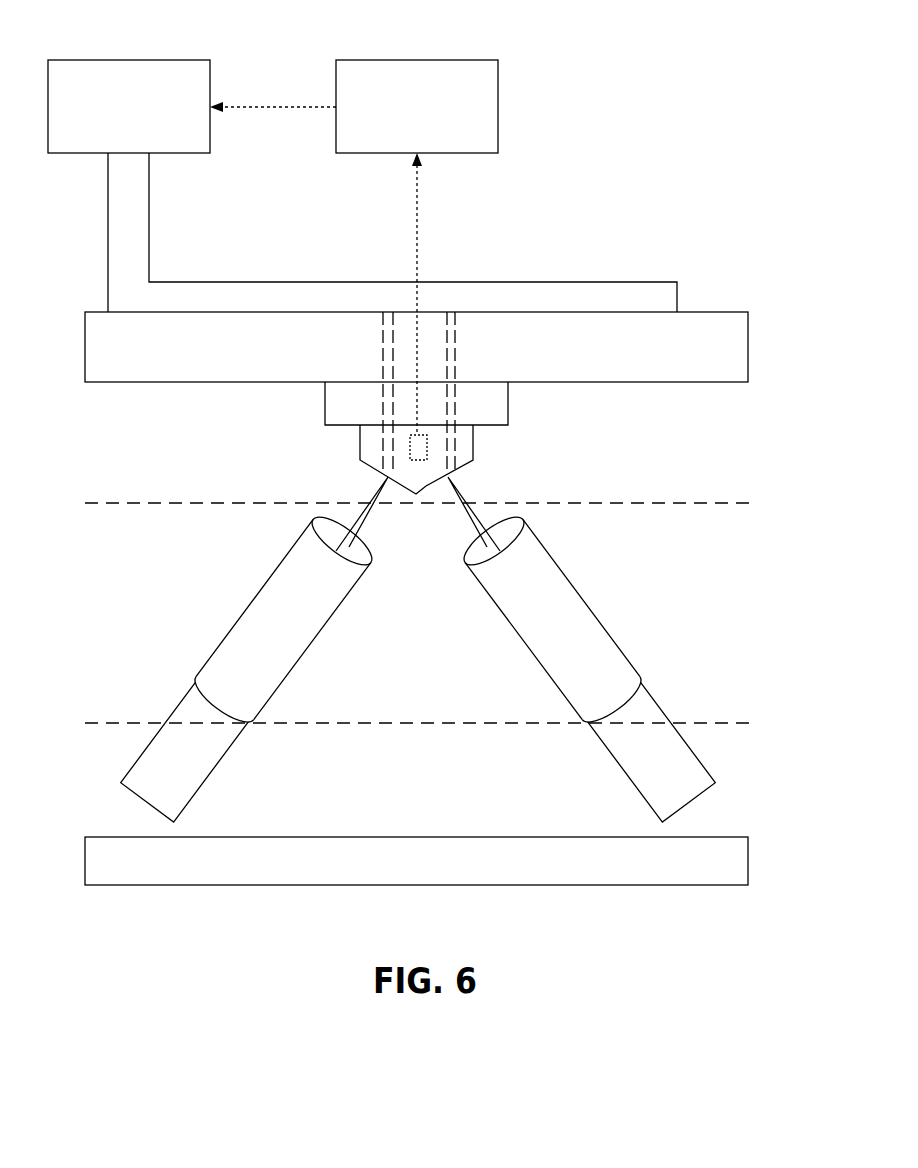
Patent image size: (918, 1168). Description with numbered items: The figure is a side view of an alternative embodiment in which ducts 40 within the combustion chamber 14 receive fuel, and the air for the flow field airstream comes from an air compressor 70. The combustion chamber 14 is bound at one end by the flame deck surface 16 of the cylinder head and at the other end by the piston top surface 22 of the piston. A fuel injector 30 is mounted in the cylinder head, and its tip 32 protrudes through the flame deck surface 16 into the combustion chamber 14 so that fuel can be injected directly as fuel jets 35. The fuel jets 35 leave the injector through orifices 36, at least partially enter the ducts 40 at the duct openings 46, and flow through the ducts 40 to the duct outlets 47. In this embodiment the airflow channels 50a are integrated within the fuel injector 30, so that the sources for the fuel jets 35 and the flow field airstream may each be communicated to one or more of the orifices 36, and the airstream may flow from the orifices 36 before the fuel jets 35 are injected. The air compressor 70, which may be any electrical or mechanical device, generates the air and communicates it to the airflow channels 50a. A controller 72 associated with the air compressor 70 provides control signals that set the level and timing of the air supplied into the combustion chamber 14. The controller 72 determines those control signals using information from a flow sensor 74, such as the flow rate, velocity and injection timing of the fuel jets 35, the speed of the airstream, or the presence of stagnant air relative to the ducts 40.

The combustion chamber 14 is at (110, 448).
The flame deck surface 16 is at (693, 382).
The piston top surface 22 is at (405, 837).
The fuel injector 30 is at (338, 396).
The tip 32 is at (470, 440).
The fuel jets 35 is at (172, 787).
The orifices 36 is at (388, 478).
The ducts 40 is at (705, 588).
The duct openings 46 is at (358, 550).
The duct outlets 47 is at (218, 705).
The airflow channels 50a is at (382, 380).
The air compressor 70 is at (173, 60).
The controller 72 is at (447, 60).
The flow sensor 74 is at (420, 462).